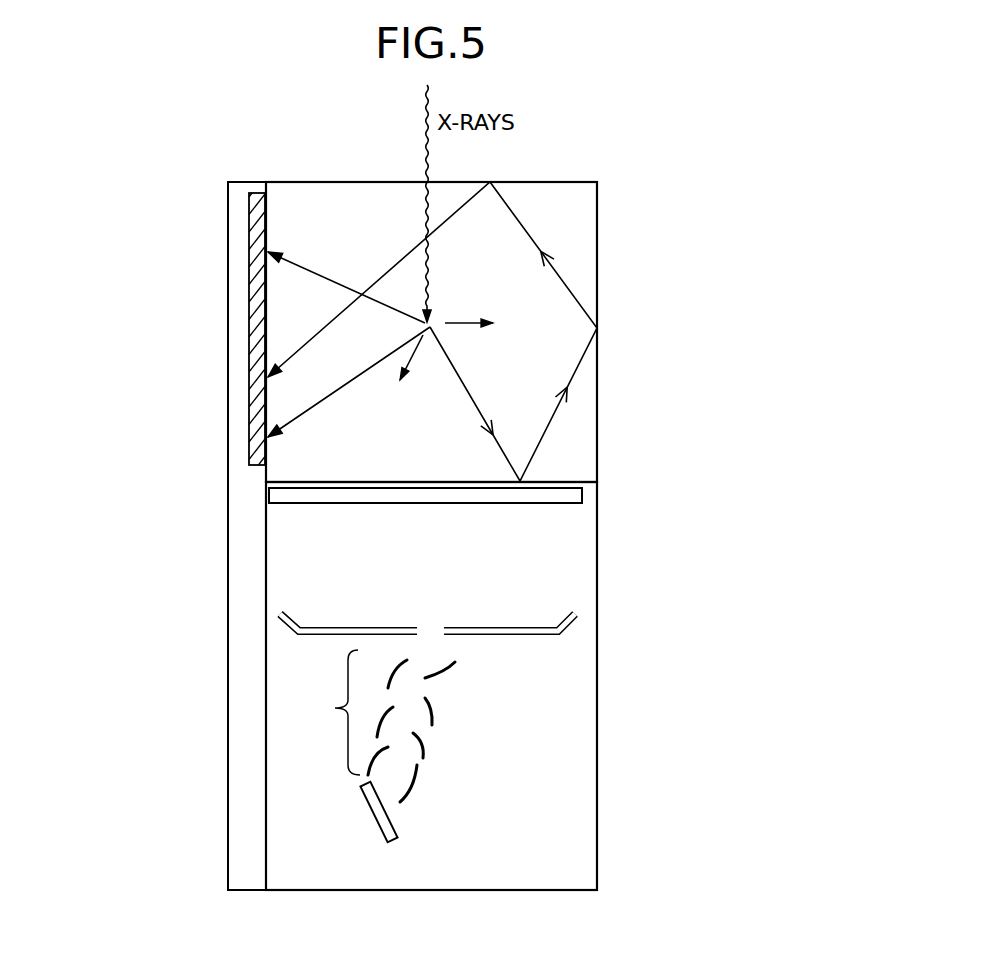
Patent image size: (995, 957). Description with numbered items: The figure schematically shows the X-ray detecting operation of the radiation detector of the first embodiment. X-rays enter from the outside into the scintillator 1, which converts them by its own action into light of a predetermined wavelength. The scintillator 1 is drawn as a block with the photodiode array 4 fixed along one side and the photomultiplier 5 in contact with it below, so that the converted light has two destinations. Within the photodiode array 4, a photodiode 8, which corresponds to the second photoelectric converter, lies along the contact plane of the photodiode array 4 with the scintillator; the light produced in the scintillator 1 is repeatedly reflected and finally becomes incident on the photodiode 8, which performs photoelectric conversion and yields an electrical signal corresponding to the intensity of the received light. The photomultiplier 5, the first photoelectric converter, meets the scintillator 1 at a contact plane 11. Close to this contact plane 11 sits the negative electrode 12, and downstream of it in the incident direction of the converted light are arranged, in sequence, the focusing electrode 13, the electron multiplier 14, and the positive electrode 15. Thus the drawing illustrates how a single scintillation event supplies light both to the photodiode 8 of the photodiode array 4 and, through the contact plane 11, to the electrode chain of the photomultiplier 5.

The scintillator 1 is at (597, 267).
The photodiode array 4 is at (228, 218).
The photomultiplier 5 is at (597, 745).
The photodiode 8 is at (248, 323).
The contact plane 11 is at (597, 485).
The negative electrode 12 is at (304, 496).
The focusing electrode 13 is at (300, 632).
The electron multiplier 14 is at (335, 708).
The positive electrode 15 is at (372, 814).